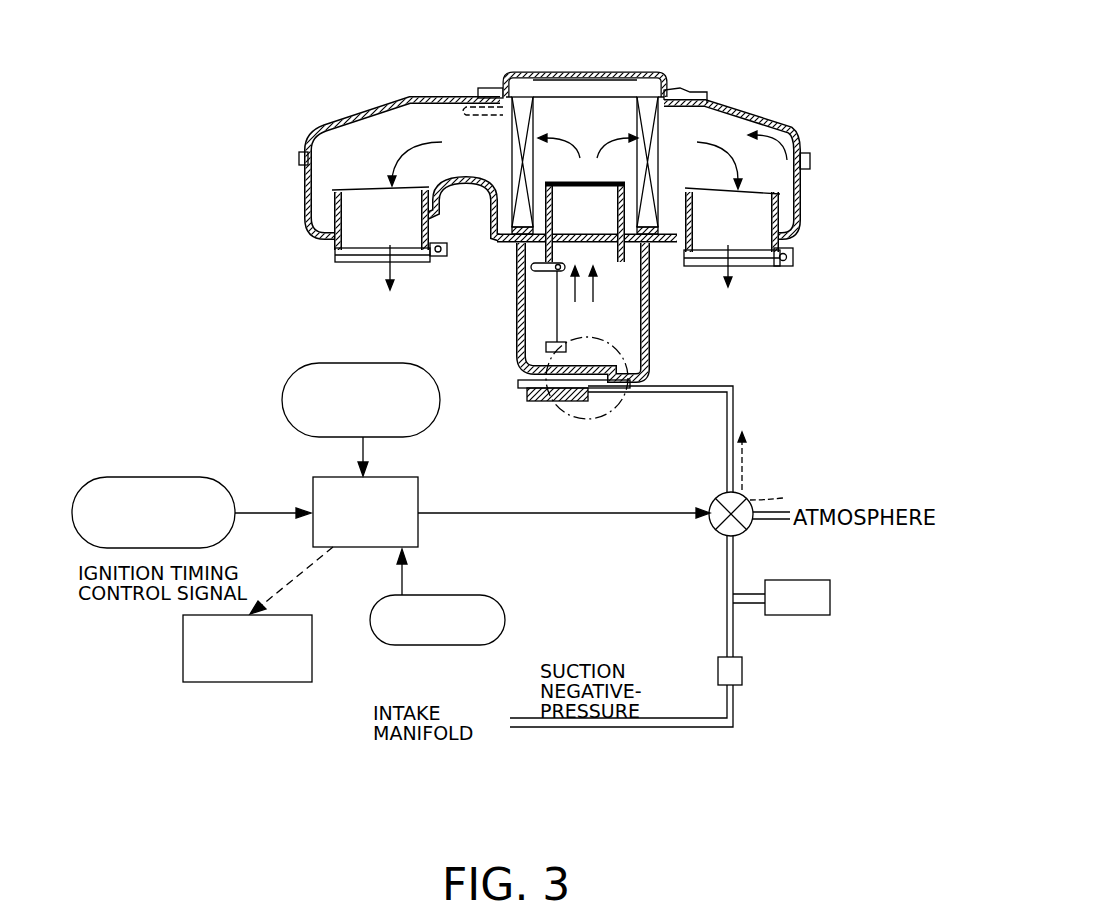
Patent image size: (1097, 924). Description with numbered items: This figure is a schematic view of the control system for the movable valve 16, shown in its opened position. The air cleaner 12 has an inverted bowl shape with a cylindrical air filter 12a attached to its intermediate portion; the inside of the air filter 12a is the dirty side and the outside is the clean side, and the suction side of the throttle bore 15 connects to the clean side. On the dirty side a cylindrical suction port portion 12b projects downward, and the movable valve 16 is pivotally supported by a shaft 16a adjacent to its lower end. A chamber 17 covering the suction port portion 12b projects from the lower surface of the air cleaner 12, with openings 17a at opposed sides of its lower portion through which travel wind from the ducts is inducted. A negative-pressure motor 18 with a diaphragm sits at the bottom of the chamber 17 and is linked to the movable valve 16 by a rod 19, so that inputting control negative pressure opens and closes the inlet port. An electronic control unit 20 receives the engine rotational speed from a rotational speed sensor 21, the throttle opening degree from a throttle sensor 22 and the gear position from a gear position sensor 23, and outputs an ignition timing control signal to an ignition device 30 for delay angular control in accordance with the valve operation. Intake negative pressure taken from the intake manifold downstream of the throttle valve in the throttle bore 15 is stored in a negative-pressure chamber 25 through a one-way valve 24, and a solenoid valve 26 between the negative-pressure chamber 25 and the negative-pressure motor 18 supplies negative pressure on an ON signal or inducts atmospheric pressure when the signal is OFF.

The air cleaner 12 is at (762, 117).
The air filter 12a is at (525, 102).
The suction port portion 12b is at (617, 207).
The throttle bore 15 is at (335, 212).
The movable valve 16 is at (557, 213).
The shaft 16a is at (532, 266).
The chamber 17 is at (650, 343).
The openings 17a is at (600, 405).
The negative-pressure motor 18 is at (520, 384).
The rod 19 is at (555, 312).
The electronic control unit 20 is at (418, 483).
The rotational speed sensor 21 is at (293, 367).
The throttle sensor 22 is at (198, 477).
The gear position sensor 23 is at (498, 598).
The one-way valve 24 is at (742, 667).
The negative-pressure chamber 25 is at (800, 582).
The solenoid valve 26 is at (742, 492).
The ignition device 30 is at (288, 683).